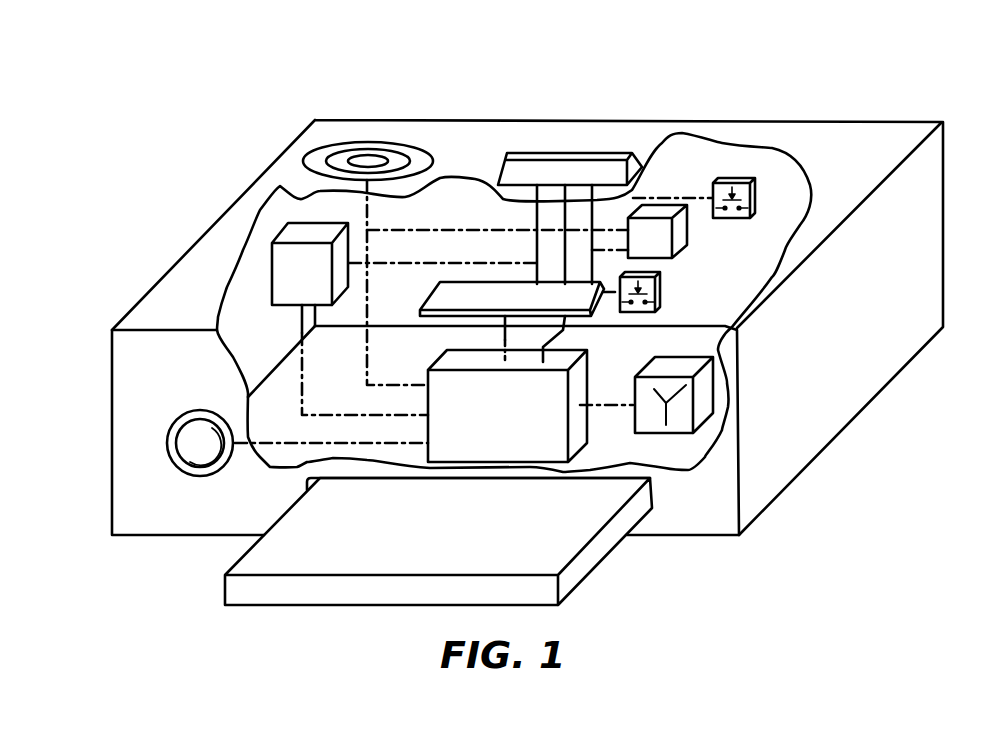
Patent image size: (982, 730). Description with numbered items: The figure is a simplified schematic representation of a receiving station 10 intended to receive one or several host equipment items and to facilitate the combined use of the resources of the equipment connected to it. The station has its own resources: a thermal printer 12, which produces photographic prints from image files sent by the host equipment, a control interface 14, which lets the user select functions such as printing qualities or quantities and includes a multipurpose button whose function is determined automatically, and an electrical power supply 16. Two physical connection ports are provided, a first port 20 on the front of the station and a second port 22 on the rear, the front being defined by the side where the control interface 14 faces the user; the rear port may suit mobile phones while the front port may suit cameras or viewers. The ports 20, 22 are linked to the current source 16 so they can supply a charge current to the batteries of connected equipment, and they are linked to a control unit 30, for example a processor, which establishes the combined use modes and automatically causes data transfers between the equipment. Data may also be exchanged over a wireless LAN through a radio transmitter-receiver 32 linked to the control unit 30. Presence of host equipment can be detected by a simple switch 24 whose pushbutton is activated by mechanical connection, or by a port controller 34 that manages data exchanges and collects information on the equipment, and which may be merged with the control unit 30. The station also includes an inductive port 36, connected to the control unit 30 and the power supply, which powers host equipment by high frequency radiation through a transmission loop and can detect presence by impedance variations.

The receiving station 10 is at (618, 69).
The thermal printer 12 is at (588, 560).
The control interface 14 is at (167, 447).
The electrical power supply 16 is at (659, 212).
The first port 20 is at (428, 296).
The second port 22 is at (538, 153).
The switch 24 is at (735, 177).
The control unit 30 is at (577, 433).
The radio transmitter-receiver 32 is at (702, 405).
The port controller 34 is at (282, 230).
The inductive port 36 is at (368, 148).